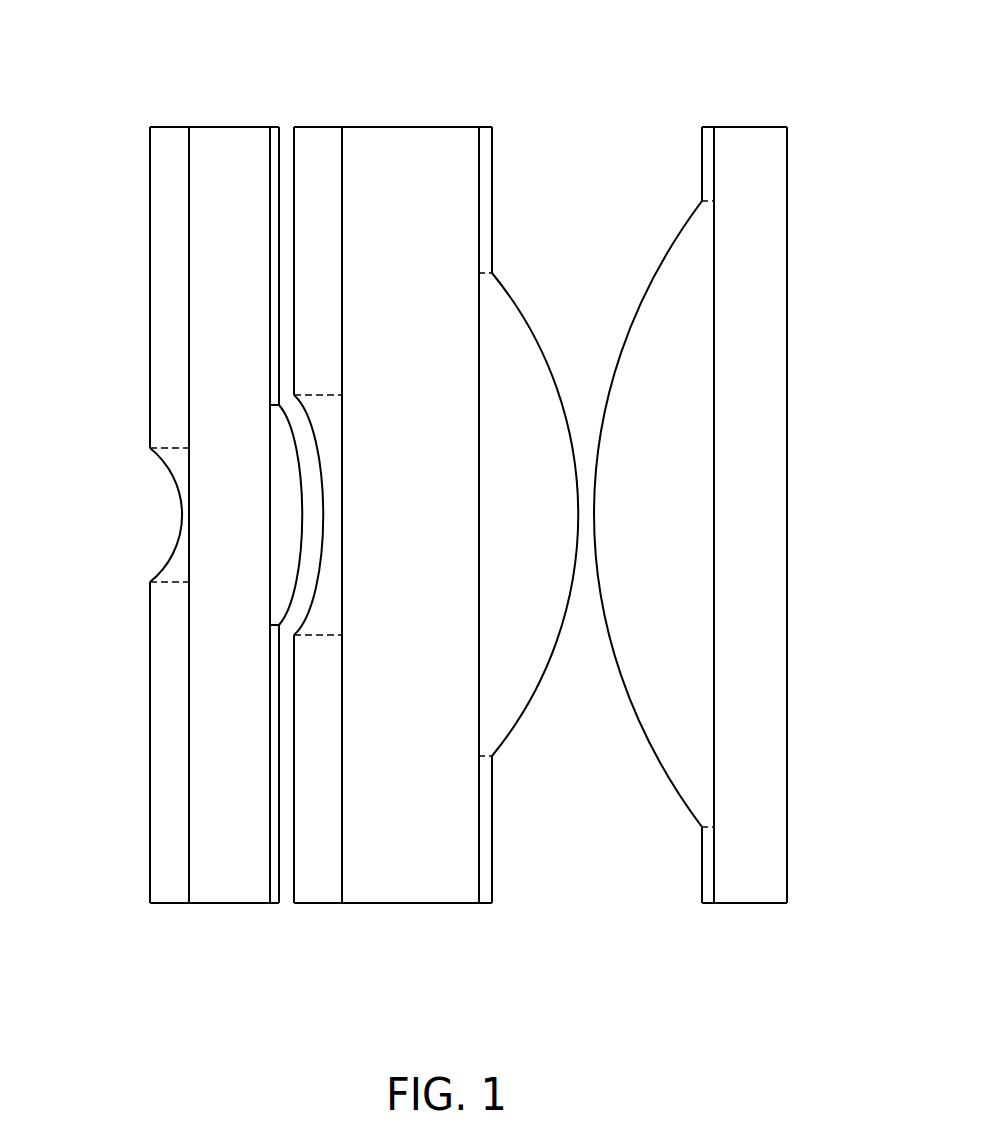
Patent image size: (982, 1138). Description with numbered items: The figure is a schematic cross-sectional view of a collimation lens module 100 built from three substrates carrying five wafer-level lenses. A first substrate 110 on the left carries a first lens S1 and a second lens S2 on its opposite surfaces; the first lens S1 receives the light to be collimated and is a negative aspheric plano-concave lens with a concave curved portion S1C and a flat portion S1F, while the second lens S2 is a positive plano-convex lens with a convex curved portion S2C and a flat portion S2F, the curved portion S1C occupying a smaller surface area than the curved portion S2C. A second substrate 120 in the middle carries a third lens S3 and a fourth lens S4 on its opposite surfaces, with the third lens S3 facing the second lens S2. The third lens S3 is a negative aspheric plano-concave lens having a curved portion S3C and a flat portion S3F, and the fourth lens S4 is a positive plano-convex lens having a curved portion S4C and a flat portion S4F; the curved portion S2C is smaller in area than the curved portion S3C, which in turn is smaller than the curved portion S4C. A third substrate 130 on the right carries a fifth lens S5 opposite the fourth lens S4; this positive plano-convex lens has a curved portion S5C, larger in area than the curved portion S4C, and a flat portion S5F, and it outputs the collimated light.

The collimation lens module 100 is at (110, 40).
The first substrate 110 is at (223, 880).
The second substrate 120 is at (410, 880).
The third substrate 130 is at (755, 880).
The first lens S1 is at (173, 885).
The flat portion S1F is at (172, 268).
The curved portion S1C is at (182, 513).
The second lens S2 is at (275, 885).
The flat portion S2F is at (272, 747).
The curved portion S2C is at (287, 498).
The third lens S3 is at (313, 880).
The flat portion S3F is at (335, 270).
The curved portion S3C is at (340, 512).
The fourth lens S4 is at (483, 888).
The flat portion S4F is at (483, 198).
The curved portion S4C is at (507, 328).
The fifth lens S5 is at (665, 737).
The flat portion S5F is at (707, 150).
The curved portion S5C is at (631, 622).